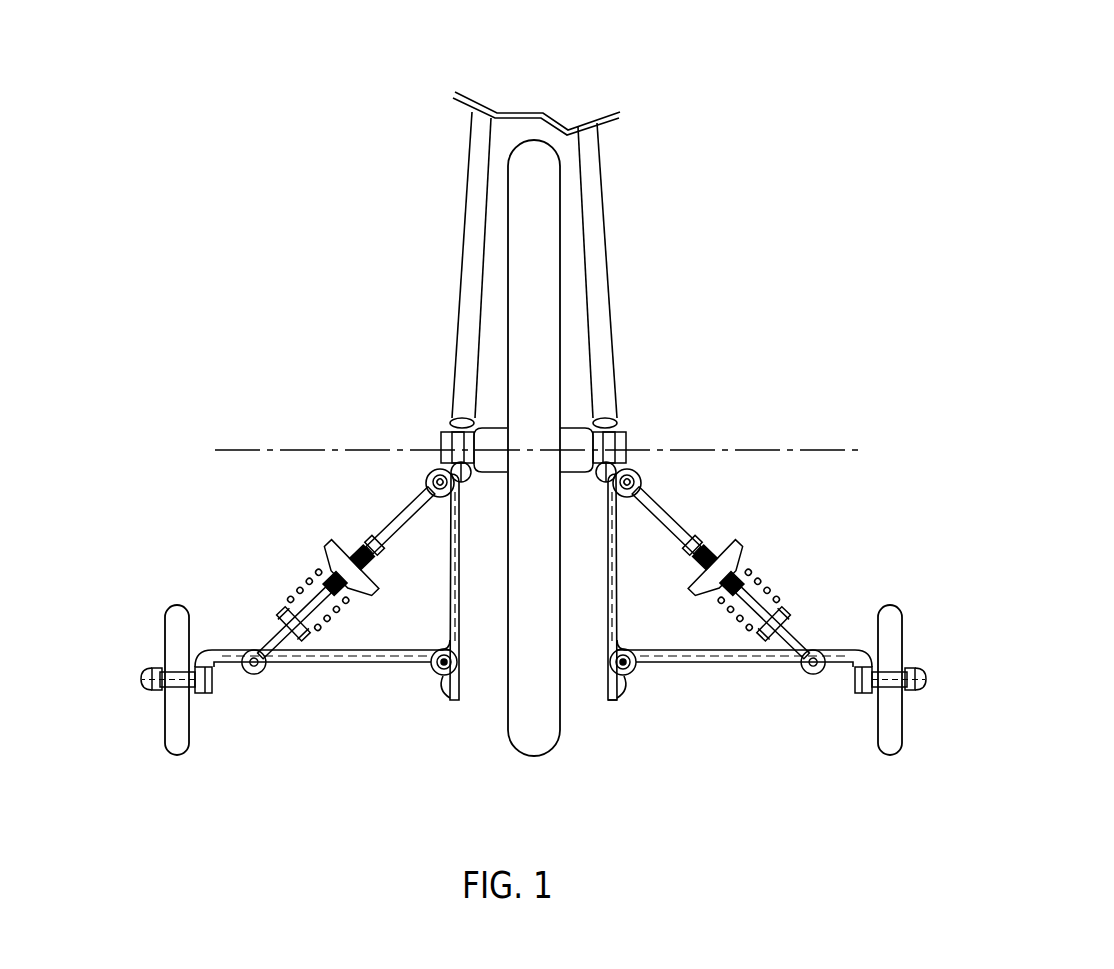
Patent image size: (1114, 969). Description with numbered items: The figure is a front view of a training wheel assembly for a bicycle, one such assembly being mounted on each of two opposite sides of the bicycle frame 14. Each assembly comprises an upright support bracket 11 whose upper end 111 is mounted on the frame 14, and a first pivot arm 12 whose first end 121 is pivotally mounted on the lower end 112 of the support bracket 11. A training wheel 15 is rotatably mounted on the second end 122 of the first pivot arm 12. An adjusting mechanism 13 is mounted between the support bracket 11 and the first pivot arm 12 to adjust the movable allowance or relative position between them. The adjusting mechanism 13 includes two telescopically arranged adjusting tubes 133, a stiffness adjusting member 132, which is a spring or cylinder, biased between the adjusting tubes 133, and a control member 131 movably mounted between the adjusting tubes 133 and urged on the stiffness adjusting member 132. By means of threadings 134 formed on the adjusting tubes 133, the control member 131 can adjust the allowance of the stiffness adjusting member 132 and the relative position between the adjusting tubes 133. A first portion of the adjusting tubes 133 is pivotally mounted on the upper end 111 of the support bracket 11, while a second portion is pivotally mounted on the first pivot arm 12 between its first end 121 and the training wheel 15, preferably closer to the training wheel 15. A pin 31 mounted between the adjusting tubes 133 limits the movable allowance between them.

The frame 14 is at (621, 170).
The upper end 111 is at (614, 428).
The adjusting mechanism 13 is at (846, 529).
The support bracket 11 is at (709, 593).
The adjusting tubes 133 is at (693, 545).
The control member 131 is at (719, 572).
The threadings 134 is at (749, 600).
The stiffness adjusting member 132 is at (773, 623).
The training wheel 15 is at (890, 623).
The second end 122 is at (855, 667).
The first pivot arm 12 is at (740, 657).
The first end 121 is at (630, 670).
The lower end 112 is at (612, 680).
The pin 31 is at (617, 627).